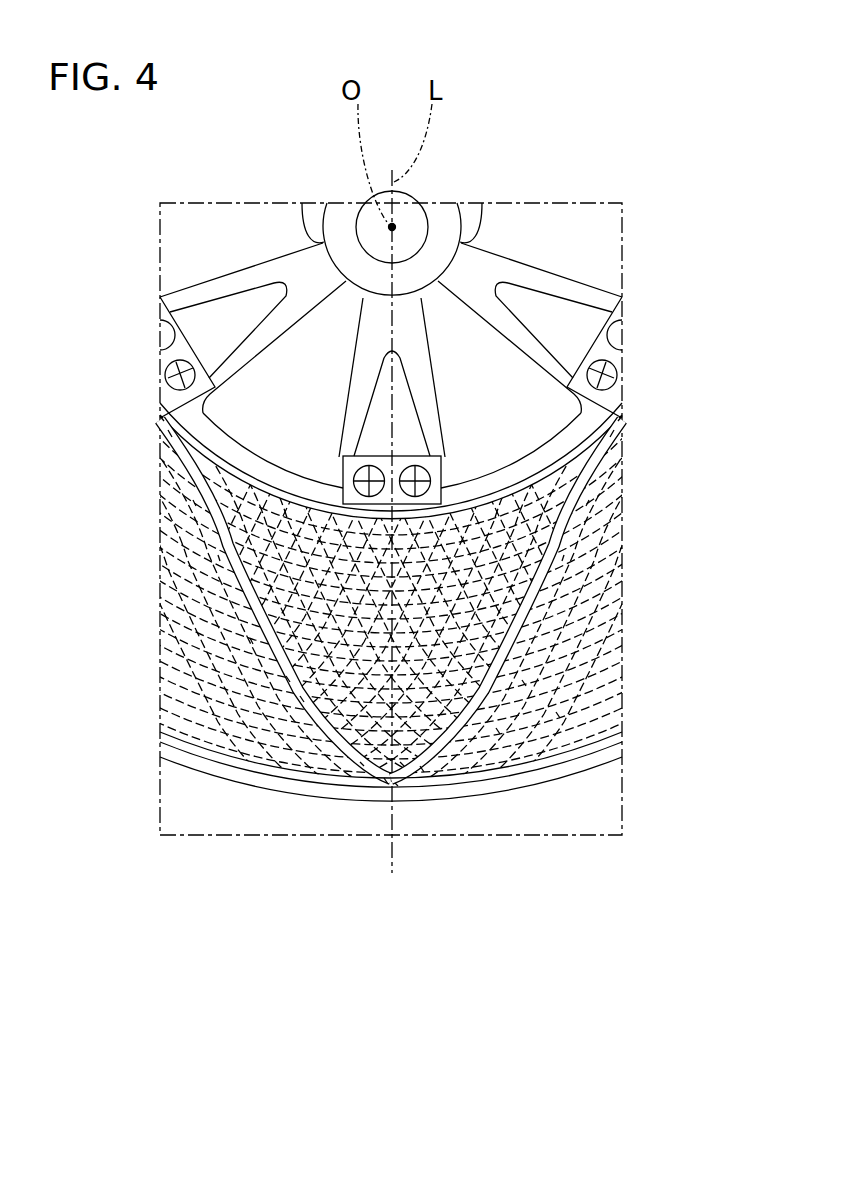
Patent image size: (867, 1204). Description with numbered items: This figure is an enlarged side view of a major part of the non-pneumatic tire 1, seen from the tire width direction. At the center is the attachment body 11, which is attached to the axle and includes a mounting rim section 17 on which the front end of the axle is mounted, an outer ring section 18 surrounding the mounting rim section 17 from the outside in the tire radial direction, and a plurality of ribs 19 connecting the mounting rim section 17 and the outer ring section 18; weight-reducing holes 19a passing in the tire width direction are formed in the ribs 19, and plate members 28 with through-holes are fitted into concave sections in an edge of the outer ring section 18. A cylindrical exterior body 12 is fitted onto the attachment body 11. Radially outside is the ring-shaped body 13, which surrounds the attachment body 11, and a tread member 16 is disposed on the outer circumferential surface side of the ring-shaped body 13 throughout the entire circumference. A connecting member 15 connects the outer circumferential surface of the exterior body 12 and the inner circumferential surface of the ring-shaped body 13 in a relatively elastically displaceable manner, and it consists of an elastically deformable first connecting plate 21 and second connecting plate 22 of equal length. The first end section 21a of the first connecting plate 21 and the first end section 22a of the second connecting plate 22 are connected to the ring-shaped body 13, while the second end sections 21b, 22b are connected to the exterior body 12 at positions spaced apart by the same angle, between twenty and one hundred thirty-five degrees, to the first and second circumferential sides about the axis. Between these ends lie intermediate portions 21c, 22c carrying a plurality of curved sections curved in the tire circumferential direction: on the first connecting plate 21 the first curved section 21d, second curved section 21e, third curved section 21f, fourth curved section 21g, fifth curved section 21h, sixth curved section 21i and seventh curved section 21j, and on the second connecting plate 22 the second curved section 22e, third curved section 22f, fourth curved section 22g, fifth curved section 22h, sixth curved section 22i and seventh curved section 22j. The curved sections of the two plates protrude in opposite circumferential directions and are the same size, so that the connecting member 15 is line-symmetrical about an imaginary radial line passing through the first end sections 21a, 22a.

The non-pneumatic tire 1 is at (686, 212).
The attachment body 11 is at (635, 118).
The exterior body 12 is at (213, 468).
The ring-shaped body 13 is at (334, 824).
The connecting member 15 is at (560, 990).
The tread member 16 is at (565, 792).
The mounting rim section 17 is at (470, 222).
The outer ring section 18 is at (530, 453).
The rib 19 is at (337, 310).
The weight-reducing hole 19a is at (214, 305).
The first connecting plate 21 is at (300, 724).
The first end section 21a is at (398, 788).
The second end section 21b is at (165, 400).
The intermediate portion 21c is at (284, 680).
The first curved section 21d is at (403, 762).
The second curved section 21e is at (362, 760).
The third curved section 21f is at (290, 698).
The fourth curved section 21g is at (220, 642).
The fifth curved section 21h is at (215, 557).
The sixth curved section 21i is at (190, 502).
The seventh curved section 21j is at (173, 434).
The second connecting plate 22 is at (482, 724).
The first end section 22a is at (384, 780).
The second end section 22b is at (617, 400).
The intermediate portion 22c is at (527, 683).
The second curved section 22e is at (422, 770).
The third curved section 22f is at (498, 730).
The fourth curved section 22g is at (560, 715).
The fifth curved section 22h is at (567, 557).
The sixth curved section 22i is at (592, 502).
The seventh curved section 22j is at (609, 434).
The plate member 28 is at (193, 352).